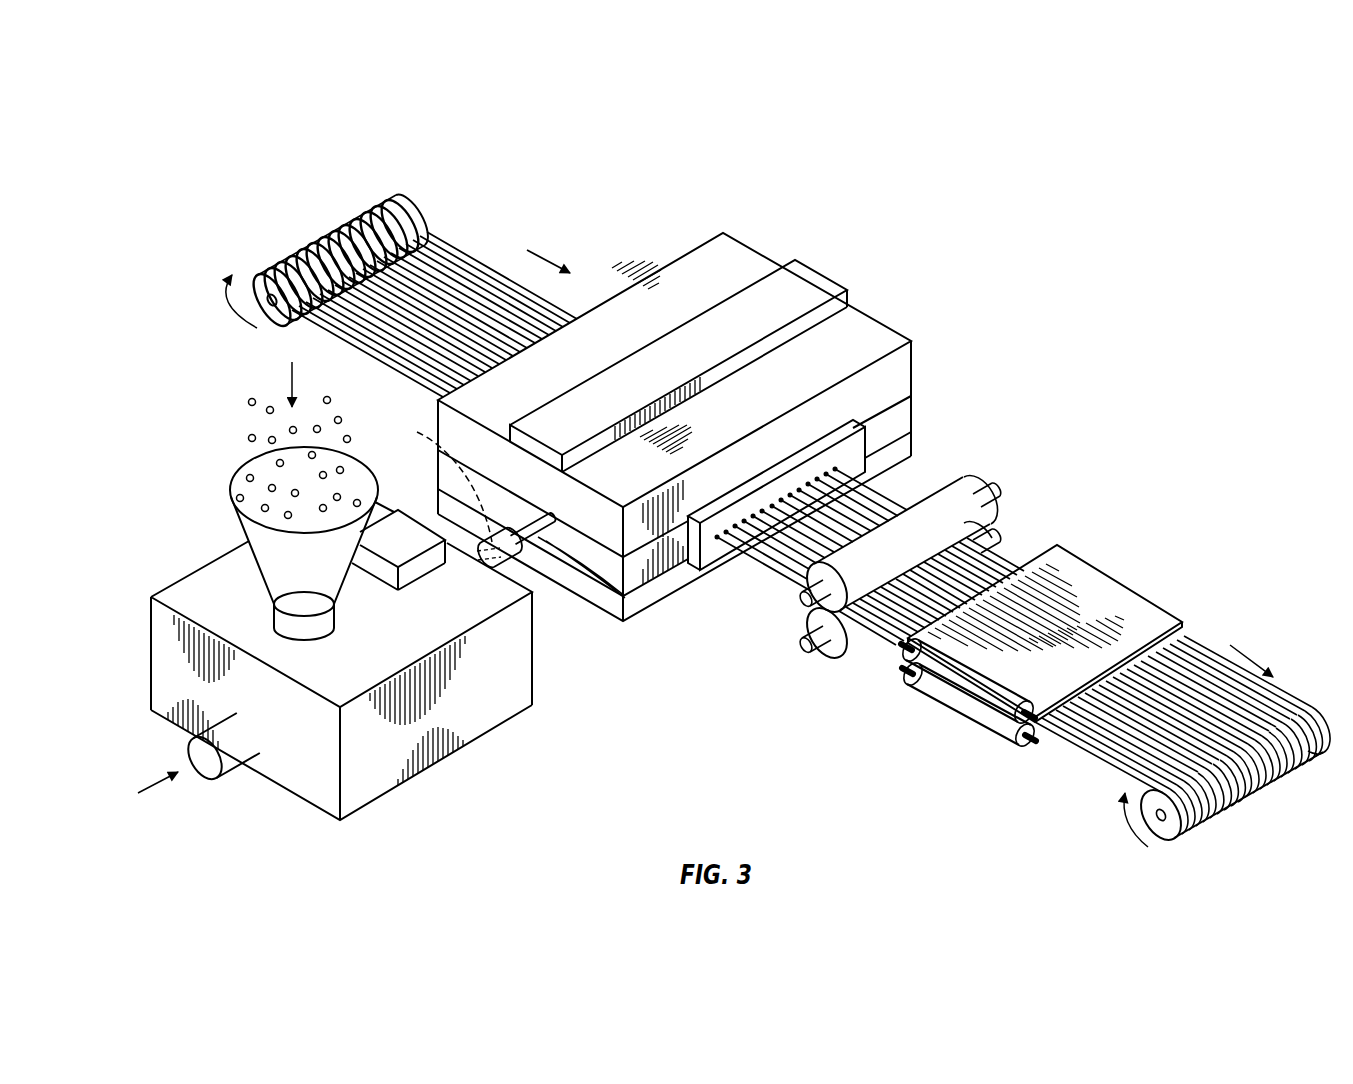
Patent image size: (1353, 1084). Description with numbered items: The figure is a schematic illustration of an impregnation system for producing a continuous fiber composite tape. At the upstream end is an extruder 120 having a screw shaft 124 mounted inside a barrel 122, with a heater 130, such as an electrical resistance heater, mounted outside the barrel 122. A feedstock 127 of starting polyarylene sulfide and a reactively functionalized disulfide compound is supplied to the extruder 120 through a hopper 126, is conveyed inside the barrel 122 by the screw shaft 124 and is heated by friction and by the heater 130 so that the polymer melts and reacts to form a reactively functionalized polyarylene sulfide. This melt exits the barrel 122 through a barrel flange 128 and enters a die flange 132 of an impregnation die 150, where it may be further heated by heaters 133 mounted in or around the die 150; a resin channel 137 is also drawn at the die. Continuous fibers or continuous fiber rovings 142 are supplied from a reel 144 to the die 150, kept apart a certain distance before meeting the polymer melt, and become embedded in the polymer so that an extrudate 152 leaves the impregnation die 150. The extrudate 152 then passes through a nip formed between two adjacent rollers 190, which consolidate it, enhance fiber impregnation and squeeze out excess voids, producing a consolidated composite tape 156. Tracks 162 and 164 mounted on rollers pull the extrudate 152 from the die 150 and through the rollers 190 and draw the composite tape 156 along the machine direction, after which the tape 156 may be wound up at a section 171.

The extruder 120 is at (518, 737).
The barrel 122 is at (393, 768).
The screw shaft 124 is at (255, 748).
The hopper 126 is at (253, 537).
The feedstock 127 is at (247, 438).
The barrel flange 128 is at (518, 567).
The heater 130 is at (425, 563).
The die flange 132 is at (640, 613).
The heaters 133 is at (810, 285).
The resin channel 137 is at (435, 475).
The continuous fiber rovings 142 is at (440, 247).
The reel 144 is at (263, 286).
The impregnation die 150 is at (771, 226).
The extrudate 152 is at (753, 570).
The consolidated composite tape 156 is at (887, 647).
The track 162 is at (1093, 590).
The track 164 is at (968, 712).
The wind-up section 171 is at (1160, 835).
The rollers 190 is at (963, 493).